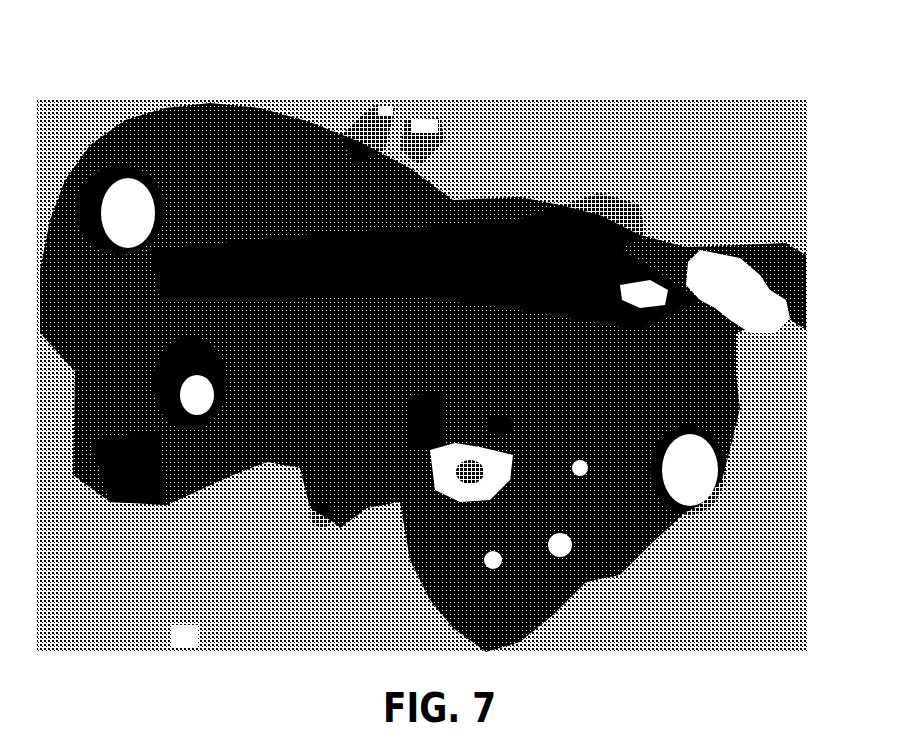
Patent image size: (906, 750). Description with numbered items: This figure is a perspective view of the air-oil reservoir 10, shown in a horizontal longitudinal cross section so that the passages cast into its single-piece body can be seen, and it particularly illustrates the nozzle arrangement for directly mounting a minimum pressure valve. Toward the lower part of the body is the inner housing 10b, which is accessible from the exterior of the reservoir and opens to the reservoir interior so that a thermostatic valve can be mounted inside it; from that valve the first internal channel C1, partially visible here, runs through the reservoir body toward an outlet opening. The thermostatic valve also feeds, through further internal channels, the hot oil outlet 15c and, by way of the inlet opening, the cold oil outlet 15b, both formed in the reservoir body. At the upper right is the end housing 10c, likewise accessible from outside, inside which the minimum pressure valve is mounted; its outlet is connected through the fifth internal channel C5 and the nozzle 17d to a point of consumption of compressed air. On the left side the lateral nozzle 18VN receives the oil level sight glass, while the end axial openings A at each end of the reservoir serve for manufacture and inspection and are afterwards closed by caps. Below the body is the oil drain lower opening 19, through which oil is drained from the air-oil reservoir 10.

The air-oil reservoir 10 is at (302, 102).
The inner housing 10b is at (480, 486).
The end housing 10c is at (743, 283).
The cold oil outlet 15b is at (415, 412).
The hot oil outlet 15c is at (488, 550).
The nozzle 17d is at (703, 230).
The lateral nozzle with level sight glass 18VN is at (190, 396).
The oil drain lower opening 19 is at (318, 512).
The end axial opening A is at (137, 212).
The first internal channel C1 is at (501, 408).
The fifth internal channel C5 is at (648, 285).